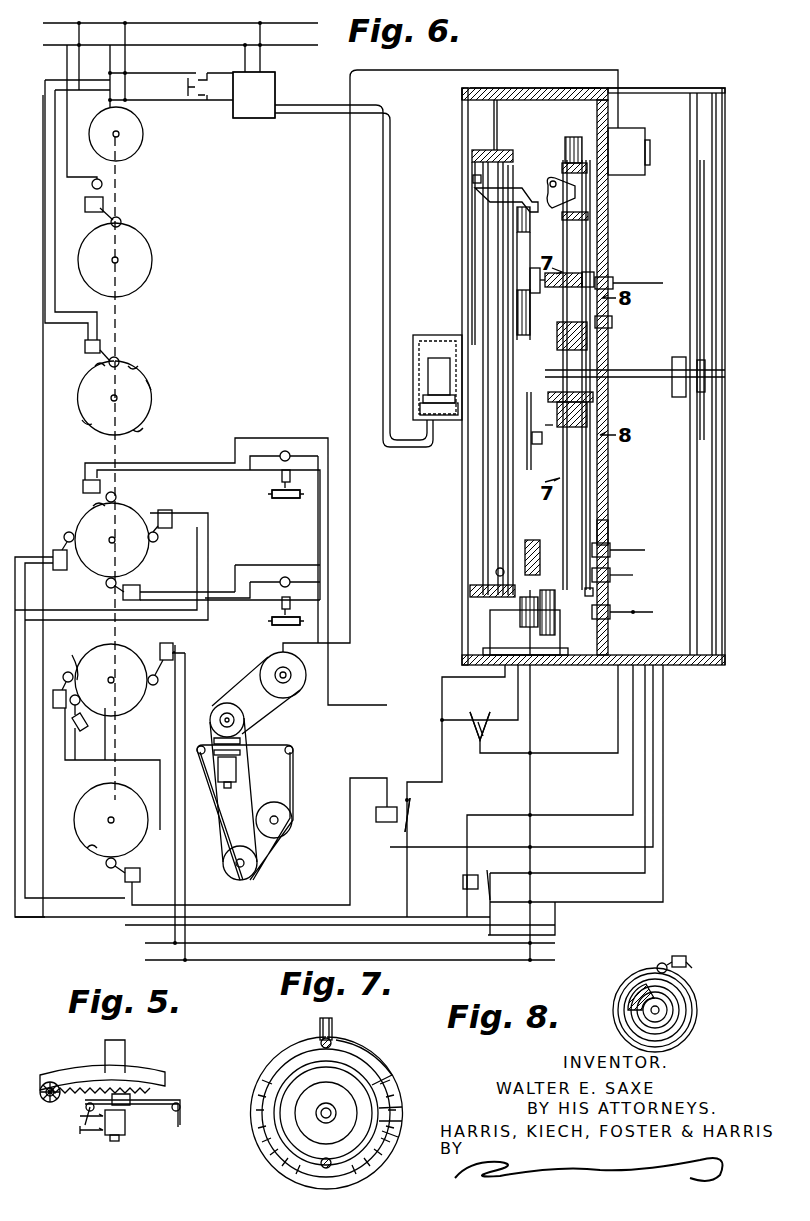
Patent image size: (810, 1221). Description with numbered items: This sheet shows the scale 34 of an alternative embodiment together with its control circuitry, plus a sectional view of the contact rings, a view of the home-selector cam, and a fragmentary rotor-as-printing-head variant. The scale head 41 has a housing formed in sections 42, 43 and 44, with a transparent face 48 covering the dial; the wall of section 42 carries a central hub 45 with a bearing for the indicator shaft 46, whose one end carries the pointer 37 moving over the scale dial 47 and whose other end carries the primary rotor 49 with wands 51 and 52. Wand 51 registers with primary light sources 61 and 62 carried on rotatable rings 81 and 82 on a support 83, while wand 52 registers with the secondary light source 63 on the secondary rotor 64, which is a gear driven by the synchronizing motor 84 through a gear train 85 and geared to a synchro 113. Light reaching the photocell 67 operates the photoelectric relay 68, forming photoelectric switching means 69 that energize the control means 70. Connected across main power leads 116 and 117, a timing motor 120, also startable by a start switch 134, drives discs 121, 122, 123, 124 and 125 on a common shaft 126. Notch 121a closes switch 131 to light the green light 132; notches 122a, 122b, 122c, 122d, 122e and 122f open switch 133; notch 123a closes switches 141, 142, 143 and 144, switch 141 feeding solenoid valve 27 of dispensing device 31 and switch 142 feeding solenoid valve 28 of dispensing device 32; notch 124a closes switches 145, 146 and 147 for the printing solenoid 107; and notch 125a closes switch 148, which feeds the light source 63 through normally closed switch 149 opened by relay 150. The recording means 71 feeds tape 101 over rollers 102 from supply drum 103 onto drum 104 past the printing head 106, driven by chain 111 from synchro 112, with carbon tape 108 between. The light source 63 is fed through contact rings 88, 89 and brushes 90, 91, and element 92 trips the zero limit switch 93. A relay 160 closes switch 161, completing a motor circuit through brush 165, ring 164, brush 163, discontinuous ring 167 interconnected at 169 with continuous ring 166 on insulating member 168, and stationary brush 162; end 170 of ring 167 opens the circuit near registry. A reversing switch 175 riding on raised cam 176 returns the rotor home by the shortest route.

In FIG. 6, the main power leads 116 is at (287, 24).
In FIG. 6, the main power leads 117 is at (448, 961).
In FIG. 6, the start switch 134 is at (189, 110).
In FIG. 6, the photoelectric switching means 69 is at (285, 91).
In FIG. 6, the photoelectric relay 68 is at (272, 116).
In FIG. 6, the timing motor 120 is at (143, 140).
In FIG. 6, the common shaft 126 is at (116, 318).
In FIG. 6, the green light 132 is at (102, 182).
In FIG. 6, the switch 131 is at (103, 200).
In FIG. 6, the notch 121a is at (121, 221).
In FIG. 6, the timing disc 121 is at (115, 260).
In FIG. 6, the control means 70 is at (205, 306).
In FIG. 6, the switch 133 is at (85, 344).
In FIG. 6, the timing disc 122 is at (115, 398).
In FIG. 6, the notch 122a is at (120, 360).
In FIG. 6, the notch 122b is at (93, 368).
In FIG. 6, the notch 122c is at (82, 422).
In FIG. 6, the notch 122d is at (140, 432).
In FIG. 6, the notch 122e is at (150, 385).
In FIG. 6, the notch 122f is at (138, 366).
In FIG. 6, the switch 141 is at (83, 483).
In FIG. 6, the notch 123a is at (92, 510).
In FIG. 6, the timing disc 123 is at (112, 540).
In FIG. 6, the switch 144 is at (171, 533).
In FIG. 6, the switch 143 is at (60, 570).
In FIG. 6, the switch 142 is at (142, 590).
In FIG. 6, the notch 124a is at (69, 658).
In FIG. 6, the timing disc 124 is at (111, 680).
In FIG. 6, the switch 147 is at (55, 690).
In FIG. 6, the switch 145 is at (168, 635).
In FIG. 6, the switch 146 is at (88, 728).
In FIG. 6, the timing disc 125 is at (111, 820).
In FIG. 6, the notch 125a is at (86, 852).
In FIG. 6, the switch 148 is at (125, 876).
In FIG. 6, the primary light source 61 is at (286, 448).
In FIG. 6, the solenoid valve 27 is at (285, 499).
In FIG. 6, the dispensing device 31 is at (266, 492).
In FIG. 6, the primary light source 62 is at (287, 574).
In FIG. 6, the solenoid valve 28 is at (283, 626).
In FIG. 6, the dispensing device 32 is at (266, 618).
In FIG. 6, the synchro 112 is at (265, 660).
In FIG. 6, the chain 111 is at (256, 684).
In FIG. 6, the printing head 106 is at (218, 712).
In FIG. 6, the recording means 71 is at (260, 718).
In FIG. 6, the carbon tape 108 is at (242, 740).
In FIG. 5, the carbon tape 108 is at (130, 1100).
In FIG. 6, the tape 101 is at (290, 787).
In FIG. 5, the tape 101 is at (168, 1100).
In FIG. 6, the rollers 102 is at (287, 754).
In FIG. 5, the rollers 102 is at (88, 1110).
In FIG. 6, the printing solenoid 107 is at (220, 790).
In FIG. 5, the printing solenoid 107 is at (108, 1140).
In FIG. 6, the supply drum 103 is at (285, 825).
In FIG. 6, the drum 104 is at (224, 858).
In FIG. 6, the reversing switch 175 is at (462, 731).
In FIG. 8, the reversing switch 175 is at (697, 975).
In FIG. 6, the relay 160 is at (385, 822).
In FIG. 6, the switch 161 is at (412, 820).
In FIG. 6, the relay 150 is at (462, 882).
In FIG. 6, the switch 149 is at (485, 885).
In FIG. 6, the scale 34 is at (679, 74).
In FIG. 6, the housing section 43 is at (485, 88).
In FIG. 6, the housing section 42 is at (528, 88).
In FIG. 6, the housing section 44 is at (575, 88).
In FIG. 6, the scale head 41 is at (633, 78).
In FIG. 6, the synchro 113 is at (632, 128).
In FIG. 6, the panel 48 is at (722, 173).
In FIG. 6, the scale dial 47 is at (704, 212).
In FIG. 6, the pointer 37 is at (716, 255).
In FIG. 6, the photoelectric cell 67 is at (430, 375).
In FIG. 6, the support 83 is at (483, 150).
In FIG. 6, the rotatable ring 81 is at (475, 160).
In FIG. 6, the wand 51 is at (500, 200).
In FIG. 7, the wand 51 is at (333, 1024).
In FIG. 6, the wand 52 is at (520, 225).
In FIG. 7, the wand 52 is at (320, 1023).
In FIG. 6, the primary rotor 49 is at (505, 245).
In FIG. 6, the rotatable ring 82 is at (500, 165).
In FIG. 6, the secondary rotor 64 is at (588, 225).
In FIG. 5, the secondary rotor 64 is at (134, 1056).
In FIG. 6, the secondary light source 63 is at (545, 188).
In FIG. 6, the brush 163 is at (540, 278).
In FIG. 7, the brush 163 is at (320, 1044).
In FIG. 6, the discontinuous contact ring 167 is at (532, 292).
In FIG. 7, the discontinuous contact ring 167 is at (385, 1095).
In FIG. 6, the insulating member 168 is at (525, 312).
In FIG. 7, the insulating member 168 is at (275, 1070).
In FIG. 6, the contact ring 164 is at (587, 272).
In FIG. 6, the brush 165 is at (612, 280).
In FIG. 6, the indicator shaft 46 is at (650, 370).
In FIG. 7, the indicator shaft 46 is at (318, 1112).
In FIG. 8, the indicator shaft 46 is at (645, 1020).
In FIG. 6, the central hub 45 is at (580, 372).
In FIG. 8, the central hub 45 is at (630, 1012).
In FIG. 6, the continuous contact ring 166 is at (530, 437).
In FIG. 7, the continuous contact ring 166 is at (275, 1125).
In FIG. 6, the brush 162 is at (527, 458).
In FIG. 7, the brush 162 is at (320, 1162).
In FIG. 6, the contact ring 88 is at (602, 535).
In FIG. 6, the contact ring 89 is at (545, 555).
In FIG. 6, the brush 90 is at (610, 540).
In FIG. 6, the brush 91 is at (612, 565).
In FIG. 6, the element 92 is at (595, 595).
In FIG. 6, the zero limit switch 93 is at (612, 620).
In FIG. 6, the synchronizing motor 84 is at (492, 627).
In FIG. 6, the gear train 85 is at (557, 648).
In FIG. 5, the gear train 85 is at (27, 1088).
In FIG. 7, the electrical interconnection 169 is at (390, 1075).
In FIG. 7, the end of contact ring 170 is at (342, 1043).
In FIG. 8, the raised cam 176 is at (616, 1000).